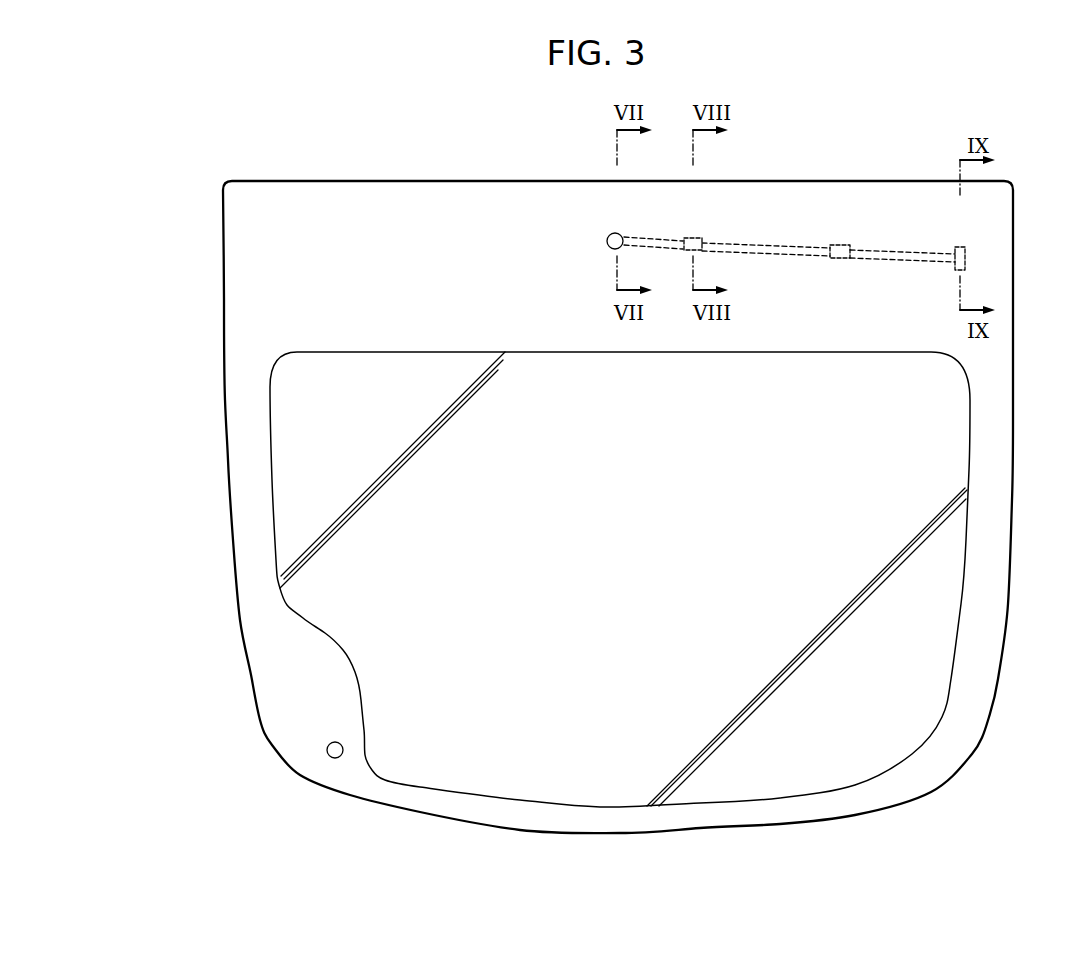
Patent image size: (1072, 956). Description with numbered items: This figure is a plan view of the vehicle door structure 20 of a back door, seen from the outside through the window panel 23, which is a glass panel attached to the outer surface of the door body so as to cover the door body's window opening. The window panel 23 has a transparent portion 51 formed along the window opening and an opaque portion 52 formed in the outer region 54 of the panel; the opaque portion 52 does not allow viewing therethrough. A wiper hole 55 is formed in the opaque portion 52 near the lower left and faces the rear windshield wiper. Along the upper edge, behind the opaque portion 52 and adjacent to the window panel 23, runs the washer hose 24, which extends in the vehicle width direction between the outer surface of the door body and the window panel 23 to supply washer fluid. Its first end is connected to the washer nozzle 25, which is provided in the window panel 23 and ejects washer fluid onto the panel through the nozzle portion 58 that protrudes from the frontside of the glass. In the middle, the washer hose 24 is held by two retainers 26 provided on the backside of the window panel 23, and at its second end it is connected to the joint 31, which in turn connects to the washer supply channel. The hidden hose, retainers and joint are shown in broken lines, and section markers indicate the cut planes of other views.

The back door 20 is at (166, 162).
The window panel 23 is at (156, 310).
The washer hose 24 is at (755, 244).
The washer nozzle 25 is at (627, 222).
The retainer 26 is at (693, 237).
The joint 31 is at (962, 247).
The transparent portion 51 is at (298, 402).
The opaque portion 52 is at (238, 422).
The outer region 54 is at (230, 517).
The wiper hole 55 is at (331, 757).
The nozzle portion 58 is at (608, 240).